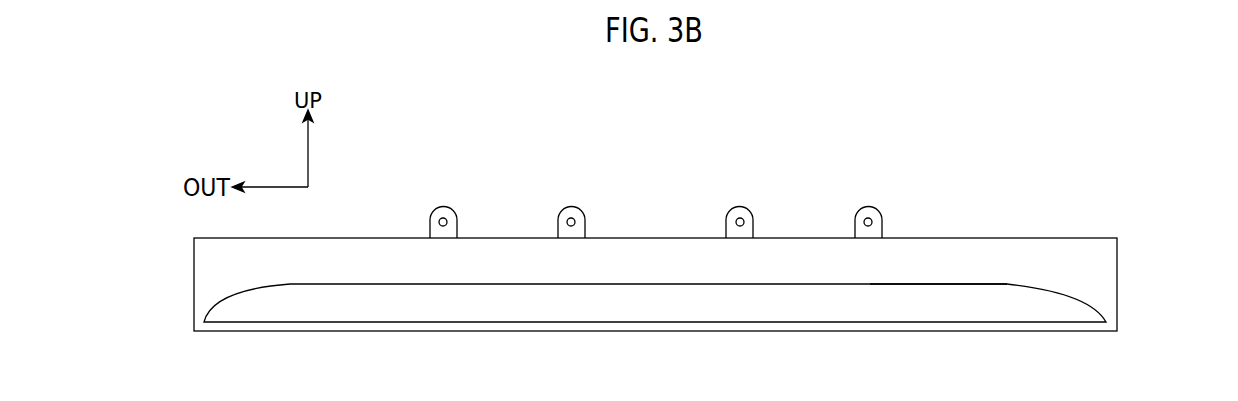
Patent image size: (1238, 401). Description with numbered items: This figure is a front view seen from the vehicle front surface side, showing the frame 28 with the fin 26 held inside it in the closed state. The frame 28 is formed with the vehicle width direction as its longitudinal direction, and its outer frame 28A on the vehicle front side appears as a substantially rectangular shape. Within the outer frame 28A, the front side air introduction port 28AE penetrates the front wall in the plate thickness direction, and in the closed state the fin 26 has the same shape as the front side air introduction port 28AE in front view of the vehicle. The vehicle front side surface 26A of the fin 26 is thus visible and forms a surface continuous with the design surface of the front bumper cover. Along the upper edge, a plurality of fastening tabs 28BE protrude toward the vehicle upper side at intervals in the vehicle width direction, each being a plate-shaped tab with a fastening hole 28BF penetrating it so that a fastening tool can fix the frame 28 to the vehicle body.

The frame 28 is at (710, 228).
The outer frame 28A is at (1131, 243).
The front side air introduction port 28AE is at (968, 277).
The fastening tab 28BE is at (445, 222).
The fastening hole 28BF is at (566, 216).
The vehicle front side surface 26A is at (655, 285).
The fin 26 is at (675, 303).